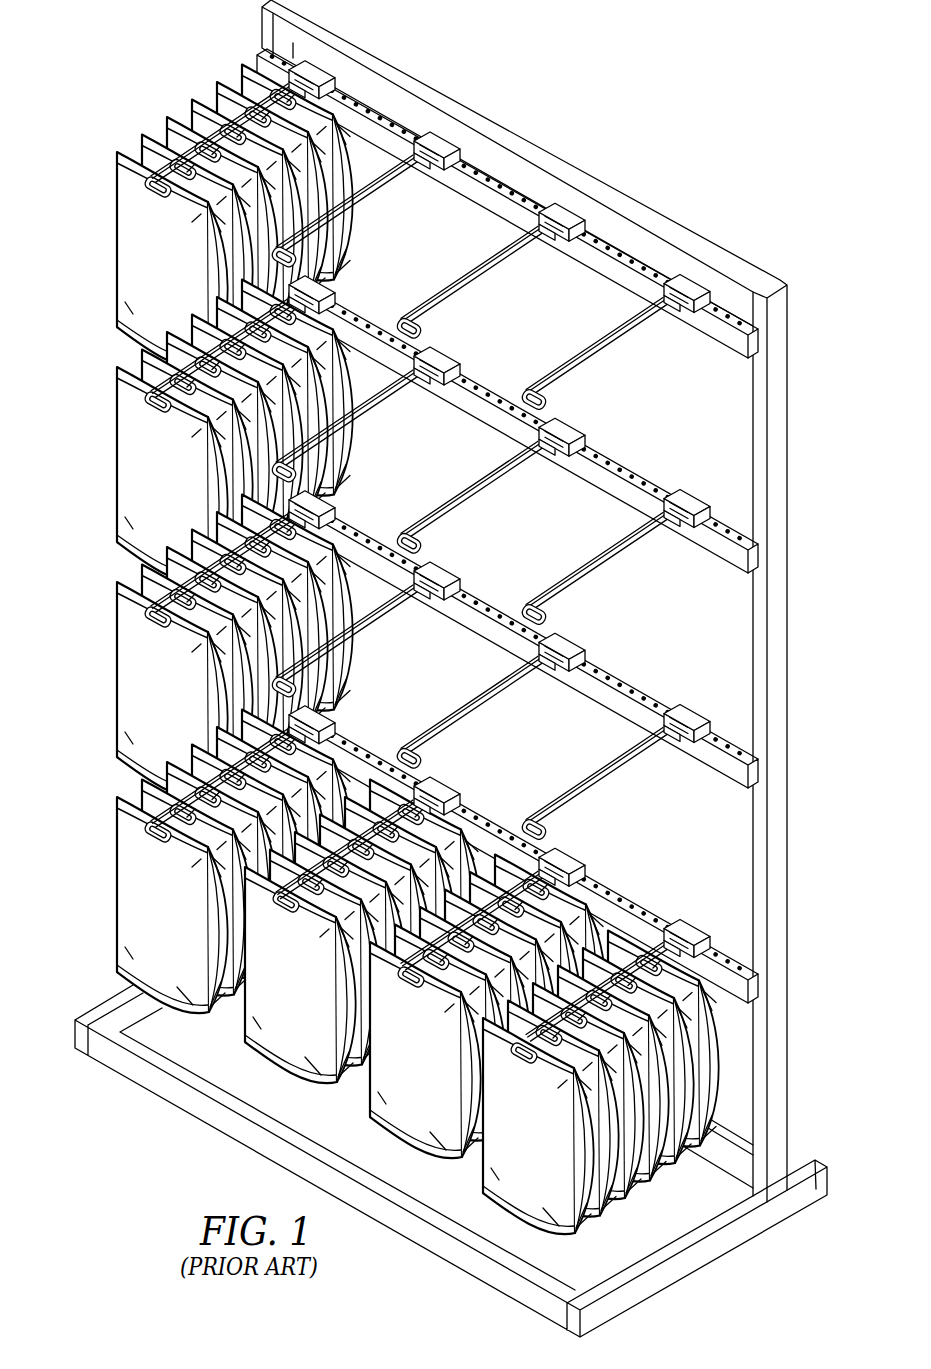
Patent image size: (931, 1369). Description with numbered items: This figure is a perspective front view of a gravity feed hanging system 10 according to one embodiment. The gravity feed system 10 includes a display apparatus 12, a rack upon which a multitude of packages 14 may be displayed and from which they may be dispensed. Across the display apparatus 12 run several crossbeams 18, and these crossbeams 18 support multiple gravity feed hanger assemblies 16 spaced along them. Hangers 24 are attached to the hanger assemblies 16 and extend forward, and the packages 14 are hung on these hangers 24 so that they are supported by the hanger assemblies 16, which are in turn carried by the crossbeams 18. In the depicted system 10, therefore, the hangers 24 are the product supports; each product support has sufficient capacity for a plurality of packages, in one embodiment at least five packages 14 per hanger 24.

The gravity feed system 10 is at (454, 668).
The display apparatus 12 is at (789, 358).
The packages 14 is at (107, 243).
The gravity feed hanger assemblies 16 is at (460, 350).
The crossbeams 18 is at (718, 560).
The hangers 24 is at (465, 278).